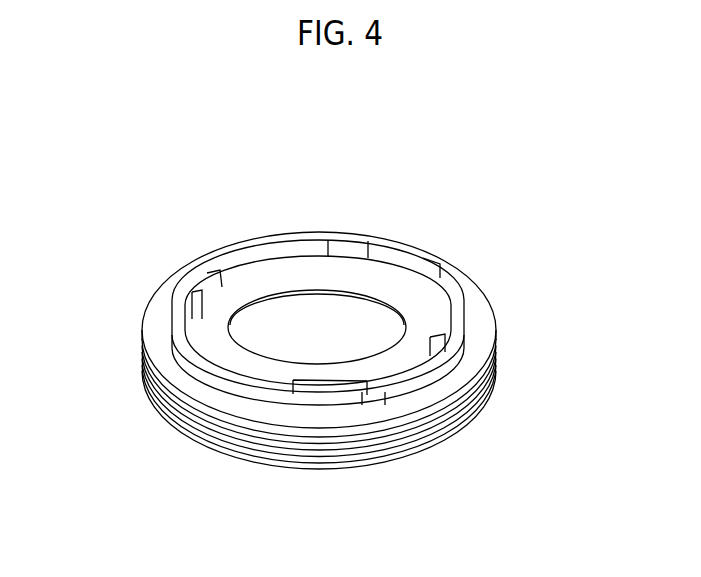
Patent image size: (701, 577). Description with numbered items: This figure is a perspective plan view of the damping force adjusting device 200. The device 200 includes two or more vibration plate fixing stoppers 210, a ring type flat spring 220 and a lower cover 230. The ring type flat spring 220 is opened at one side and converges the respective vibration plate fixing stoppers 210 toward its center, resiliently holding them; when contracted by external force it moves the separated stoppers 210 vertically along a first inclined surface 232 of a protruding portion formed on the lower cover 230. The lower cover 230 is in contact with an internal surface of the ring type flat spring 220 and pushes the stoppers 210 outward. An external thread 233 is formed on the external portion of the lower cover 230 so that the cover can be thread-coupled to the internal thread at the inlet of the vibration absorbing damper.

The damping force adjusting device 200 is at (447, 224).
The vibration plate fixing stopper 210 is at (445, 328).
The ring type flat spring 220 is at (440, 376).
The lower cover 230 is at (206, 407).
The first inclined surface 232 is at (215, 318).
The external thread 233 is at (410, 440).